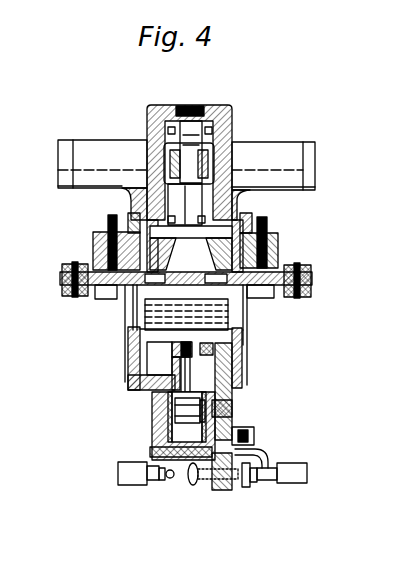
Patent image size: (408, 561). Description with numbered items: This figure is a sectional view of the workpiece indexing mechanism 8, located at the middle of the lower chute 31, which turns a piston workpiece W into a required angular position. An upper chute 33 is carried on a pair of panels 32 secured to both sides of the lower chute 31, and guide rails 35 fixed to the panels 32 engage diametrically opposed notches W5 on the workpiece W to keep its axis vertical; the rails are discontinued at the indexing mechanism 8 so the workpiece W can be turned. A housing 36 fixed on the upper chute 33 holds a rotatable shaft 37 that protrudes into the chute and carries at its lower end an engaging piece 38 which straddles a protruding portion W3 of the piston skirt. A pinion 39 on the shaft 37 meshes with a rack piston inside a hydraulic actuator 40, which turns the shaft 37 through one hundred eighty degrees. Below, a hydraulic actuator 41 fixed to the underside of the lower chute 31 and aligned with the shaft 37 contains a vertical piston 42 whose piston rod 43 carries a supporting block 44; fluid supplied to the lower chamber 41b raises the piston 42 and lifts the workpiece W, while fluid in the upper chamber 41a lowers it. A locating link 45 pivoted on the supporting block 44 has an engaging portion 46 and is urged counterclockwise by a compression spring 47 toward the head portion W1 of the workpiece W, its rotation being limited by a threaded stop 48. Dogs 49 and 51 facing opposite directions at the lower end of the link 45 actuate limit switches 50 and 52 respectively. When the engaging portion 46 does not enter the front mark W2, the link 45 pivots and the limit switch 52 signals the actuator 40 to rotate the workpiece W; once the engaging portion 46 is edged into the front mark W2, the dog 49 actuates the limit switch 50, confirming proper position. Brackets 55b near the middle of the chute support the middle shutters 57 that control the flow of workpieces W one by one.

The indexing mechanism 8 is at (253, 138).
The lower chute 31 is at (128, 357).
The panels 32 is at (125, 323).
The upper chute 33 is at (282, 264).
The guide rails 35 is at (123, 288).
The housing 36 is at (150, 145).
The shaft 37 is at (195, 202).
The engaging piece 38 is at (172, 268).
The pinion 39 is at (232, 151).
The hydraulic actuator 40 is at (85, 145).
The hydraulic actuator 41 is at (152, 437).
The upper chamber 41a is at (178, 408).
The lower chamber 41b is at (152, 450).
The piston 42 is at (168, 425).
The piston rod 43 is at (128, 380).
The supporting block 44 is at (190, 365).
The locating link 45 is at (236, 385).
The engaging portion 46 is at (233, 348).
The compression spring 47 is at (233, 407).
The stop 48 is at (254, 438).
The dog 49 is at (248, 487).
The limit switch 50 is at (298, 484).
The dog 51 is at (196, 488).
The limit switch 52 is at (142, 480).
The brackets 55b is at (98, 252).
The middle shutters 57 is at (62, 281).
The piston workpiece W is at (195, 303).
The head portion W1 is at (203, 369).
The front mark W2 is at (247, 345).
The protruding portion W3 is at (191, 230).
The notches W5 is at (88, 286).